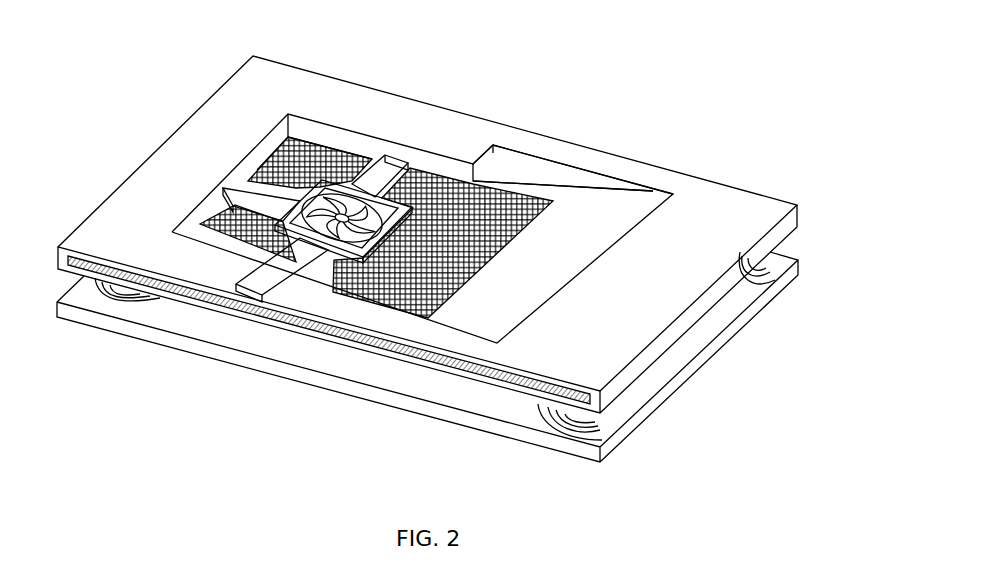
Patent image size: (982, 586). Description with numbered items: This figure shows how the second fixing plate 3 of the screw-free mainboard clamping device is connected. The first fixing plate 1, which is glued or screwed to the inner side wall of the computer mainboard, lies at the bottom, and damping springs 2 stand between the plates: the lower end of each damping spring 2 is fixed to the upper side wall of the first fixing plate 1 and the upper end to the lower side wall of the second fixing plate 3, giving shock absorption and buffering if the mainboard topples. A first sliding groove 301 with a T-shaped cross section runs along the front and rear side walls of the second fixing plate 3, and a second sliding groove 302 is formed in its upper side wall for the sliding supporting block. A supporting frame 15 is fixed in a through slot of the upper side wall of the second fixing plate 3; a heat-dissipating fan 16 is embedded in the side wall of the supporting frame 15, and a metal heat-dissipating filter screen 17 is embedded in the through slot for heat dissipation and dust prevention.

The first fixing plate 1 is at (213, 327).
The damping spring 2 is at (580, 415).
The second fixing plate 3 is at (705, 195).
The first sliding groove 301 is at (375, 352).
The second sliding groove 302 is at (578, 168).
The supporting frame 15 is at (393, 168).
The heat-dissipating fan 16 is at (287, 140).
The heat-dissipating filter screen 17 is at (510, 247).